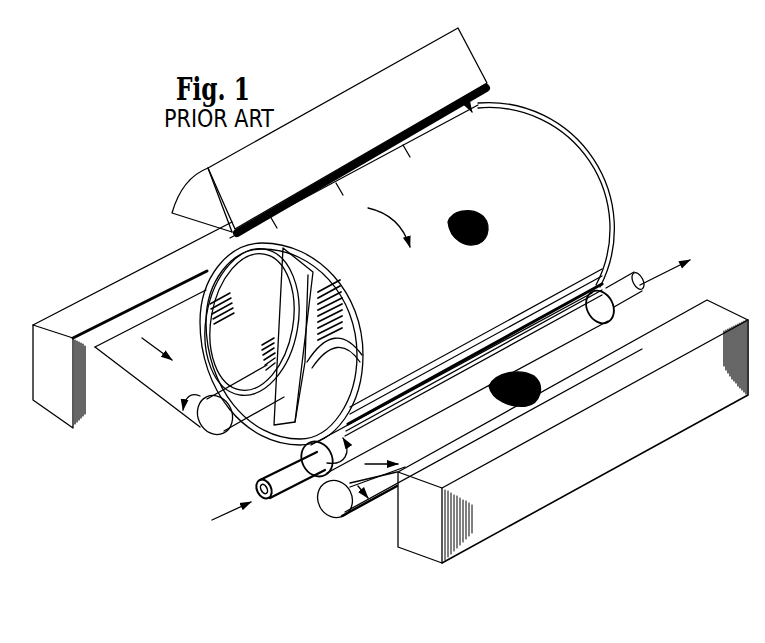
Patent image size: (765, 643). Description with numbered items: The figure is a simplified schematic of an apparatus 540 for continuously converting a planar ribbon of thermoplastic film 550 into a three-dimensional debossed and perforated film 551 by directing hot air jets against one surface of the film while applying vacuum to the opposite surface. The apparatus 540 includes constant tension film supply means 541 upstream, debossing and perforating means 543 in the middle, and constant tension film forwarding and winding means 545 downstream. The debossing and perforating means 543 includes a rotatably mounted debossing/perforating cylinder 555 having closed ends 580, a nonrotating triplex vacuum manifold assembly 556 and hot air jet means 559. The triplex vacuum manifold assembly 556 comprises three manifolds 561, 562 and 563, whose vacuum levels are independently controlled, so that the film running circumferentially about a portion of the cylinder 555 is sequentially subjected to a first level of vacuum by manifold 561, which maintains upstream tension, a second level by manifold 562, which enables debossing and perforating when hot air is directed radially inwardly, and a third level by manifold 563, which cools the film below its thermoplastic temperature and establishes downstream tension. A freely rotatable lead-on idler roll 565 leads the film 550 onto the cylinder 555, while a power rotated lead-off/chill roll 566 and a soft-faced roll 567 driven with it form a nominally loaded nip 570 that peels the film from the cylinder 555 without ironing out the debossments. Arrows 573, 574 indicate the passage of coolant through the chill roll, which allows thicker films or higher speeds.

The apparatus 540 is at (175, 195).
The hot air jet means 559 is at (467, 65).
The debossing and perforating means 543 is at (538, 97).
The debossing/perforating cylinder 555 is at (603, 153).
The closed ends 580 is at (560, 125).
The triplex vacuum manifold assembly 556 is at (298, 425).
The manifold 561 is at (213, 318).
The manifold 562 is at (255, 275).
The manifold 563 is at (347, 327).
The lead-on idler roll 565 is at (216, 424).
The thermoplastic film 550 is at (170, 388).
The constant tension film supply means 541 is at (58, 398).
The constant tension film forwarding and winding means 545 is at (428, 540).
The debossed and perforated film 551 is at (618, 335).
The arrow 574 is at (660, 274).
The nip 570 is at (312, 487).
The arrow 573 is at (228, 511).
The lead-off/chill roll 566 is at (337, 487).
The soft-faced roll 567 is at (383, 500).